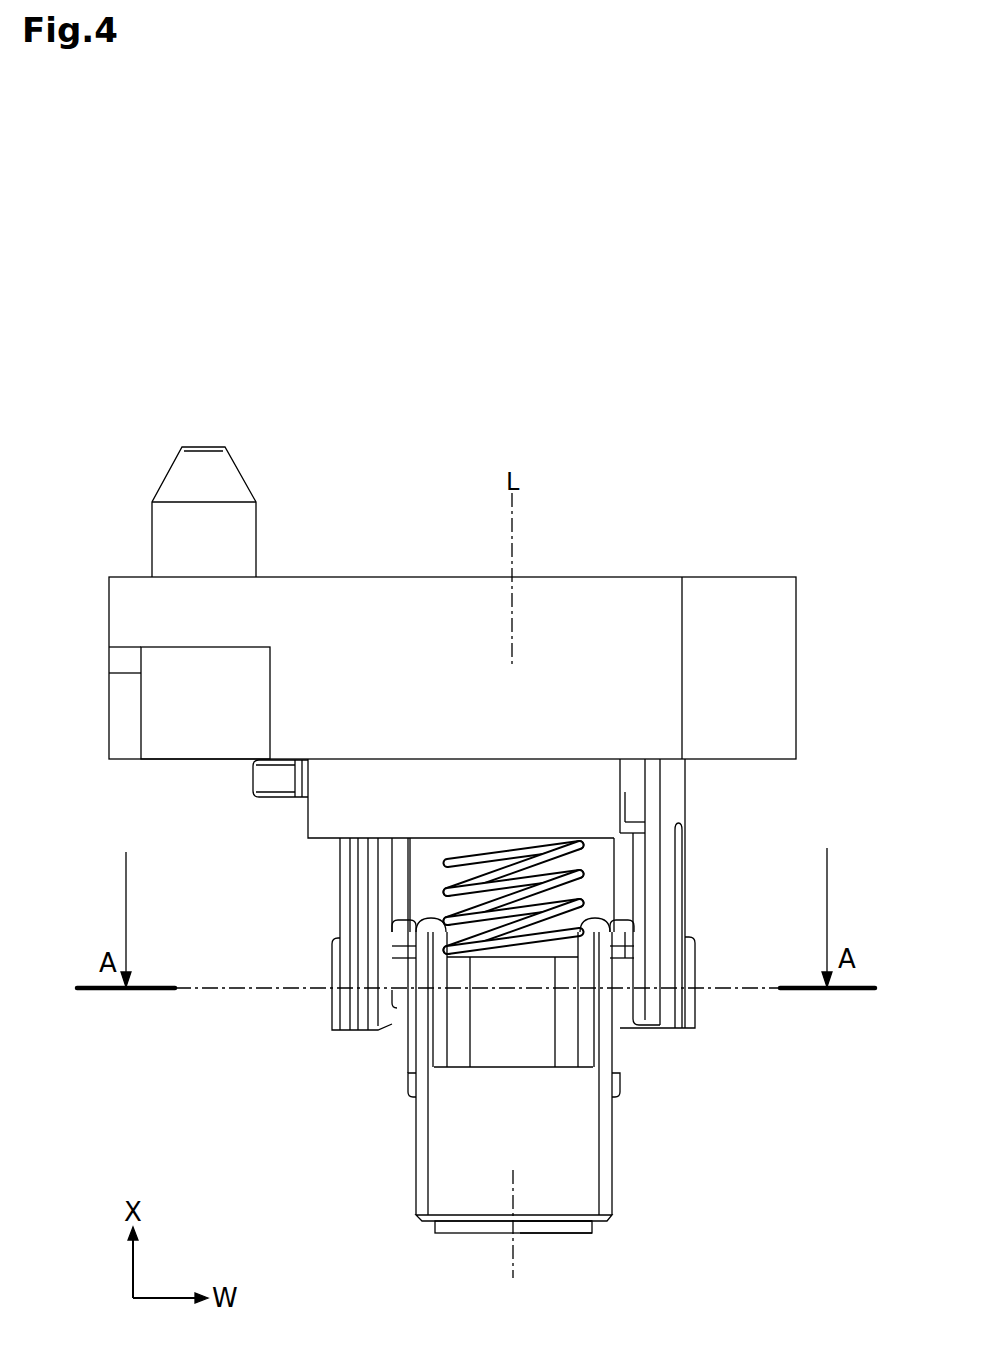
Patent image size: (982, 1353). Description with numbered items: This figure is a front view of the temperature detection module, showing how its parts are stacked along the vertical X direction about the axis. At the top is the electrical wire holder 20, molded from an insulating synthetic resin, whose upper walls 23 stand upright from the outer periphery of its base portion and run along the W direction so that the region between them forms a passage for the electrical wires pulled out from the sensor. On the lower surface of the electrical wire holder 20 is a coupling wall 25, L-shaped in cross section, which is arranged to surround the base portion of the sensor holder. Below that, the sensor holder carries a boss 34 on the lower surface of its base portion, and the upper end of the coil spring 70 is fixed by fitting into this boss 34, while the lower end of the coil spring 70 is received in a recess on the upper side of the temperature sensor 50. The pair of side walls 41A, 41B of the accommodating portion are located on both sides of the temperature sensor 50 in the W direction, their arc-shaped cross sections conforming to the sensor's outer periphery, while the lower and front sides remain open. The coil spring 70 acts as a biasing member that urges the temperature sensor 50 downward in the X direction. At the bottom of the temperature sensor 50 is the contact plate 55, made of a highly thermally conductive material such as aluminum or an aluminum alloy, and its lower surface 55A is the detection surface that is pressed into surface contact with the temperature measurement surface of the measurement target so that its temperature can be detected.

The electrical wire holder 20 is at (452, 603).
The upper walls 23 is at (557, 596).
The coupling wall 25 is at (327, 812).
The boss 34 is at (532, 863).
The side wall 41A is at (668, 886).
The side wall 41B is at (340, 897).
The coil spring 70 is at (507, 915).
The temperature sensor 50 is at (538, 1117).
The contact plate 55 is at (455, 1228).
The lower surface 55A is at (563, 1234).